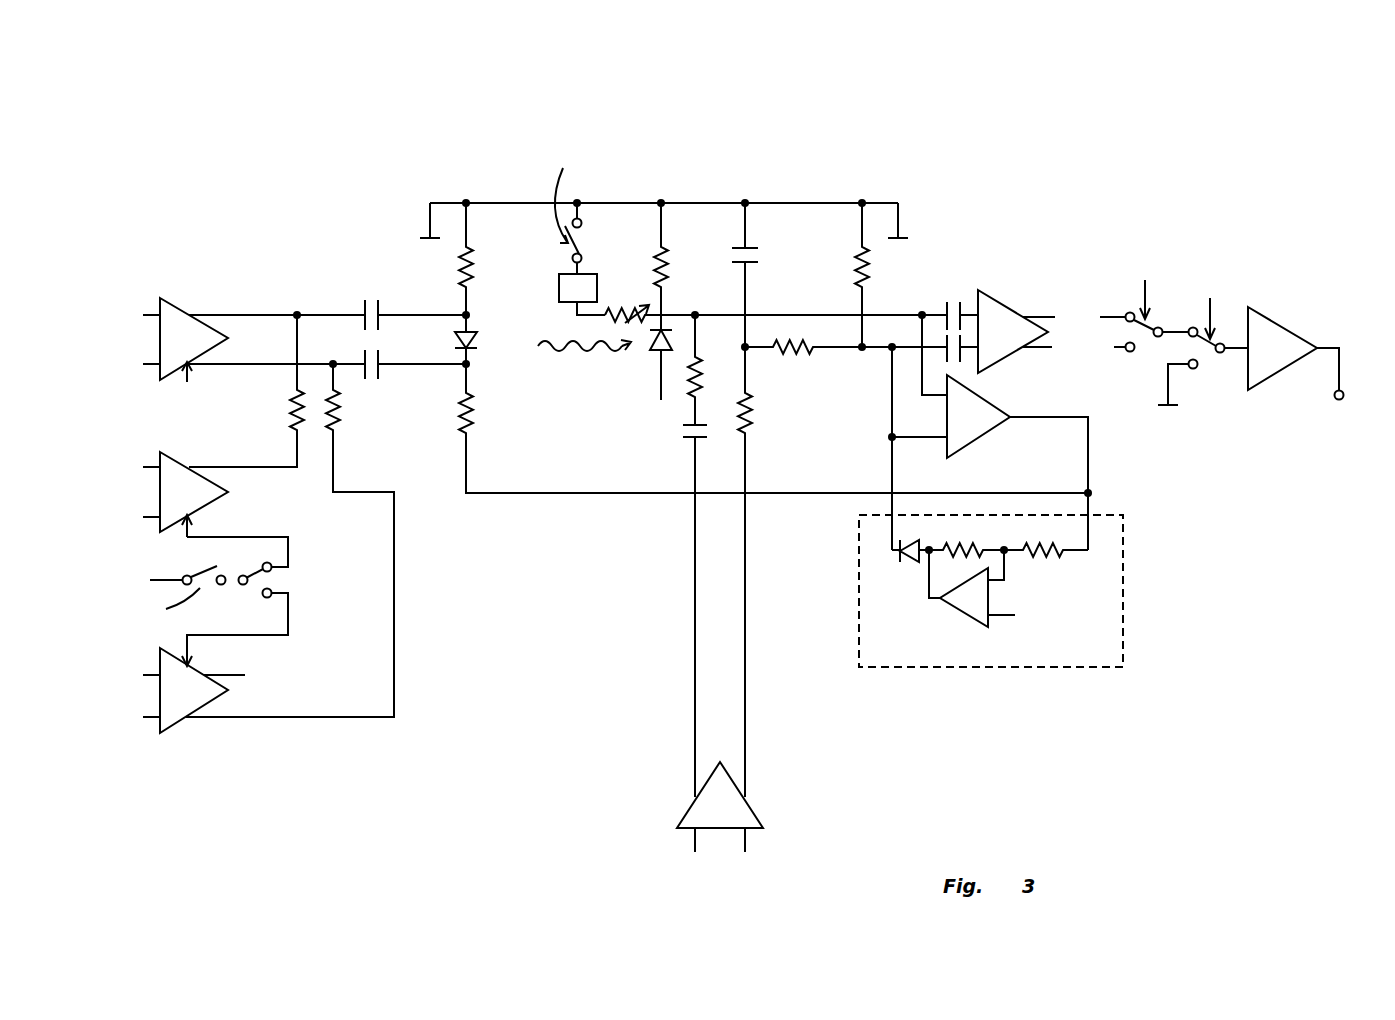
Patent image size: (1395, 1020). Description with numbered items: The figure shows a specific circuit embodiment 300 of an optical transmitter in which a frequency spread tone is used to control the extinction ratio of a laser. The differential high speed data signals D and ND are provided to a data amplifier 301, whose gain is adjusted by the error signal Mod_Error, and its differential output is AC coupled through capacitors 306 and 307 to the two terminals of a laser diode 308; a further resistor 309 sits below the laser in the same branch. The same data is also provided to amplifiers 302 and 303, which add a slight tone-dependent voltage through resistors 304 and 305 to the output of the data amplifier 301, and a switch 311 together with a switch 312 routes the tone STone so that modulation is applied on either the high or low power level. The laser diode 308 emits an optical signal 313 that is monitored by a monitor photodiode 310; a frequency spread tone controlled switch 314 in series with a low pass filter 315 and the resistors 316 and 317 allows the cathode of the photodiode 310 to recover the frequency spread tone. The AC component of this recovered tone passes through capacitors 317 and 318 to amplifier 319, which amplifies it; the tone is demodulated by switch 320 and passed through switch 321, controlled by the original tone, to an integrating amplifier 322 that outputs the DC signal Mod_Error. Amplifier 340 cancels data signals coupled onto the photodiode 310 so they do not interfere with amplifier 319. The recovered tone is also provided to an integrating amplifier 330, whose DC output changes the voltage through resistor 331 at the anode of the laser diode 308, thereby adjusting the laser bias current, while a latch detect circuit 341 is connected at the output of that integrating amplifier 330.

The circuit embodiment 300 is at (1145, 772).
The data amplifier 301 is at (205, 349).
The amplifier 302 is at (205, 503).
The amplifier 303 is at (205, 701).
The resistor 304 is at (290, 420).
The resistor 305 is at (341, 420).
The capacitor 306 is at (370, 304).
The capacitor 307 is at (371, 380).
The laser diode 308 is at (457, 342).
The resistor 309 is at (472, 407).
The monitor photodiode 310 is at (653, 353).
The switch 311 is at (203, 577).
The switch 312 is at (257, 588).
The optical signal 313 is at (573, 353).
The frequency spread tone controlled switch 314 is at (584, 239).
The low pass filter 315 is at (597, 283).
The resistor 316 is at (668, 266).
The resistor / capacitor 317 is at (633, 326).
The capacitor 318 is at (950, 358).
The amplifier 319 is at (1005, 366).
The switch 320 is at (1140, 352).
The switch 321 is at (1206, 360).
The integrating amplifier 322 is at (1264, 384).
The integrating amplifier 330 is at (982, 440).
The resistor 331 is at (458, 265).
The amplifier 340 is at (736, 819).
The latch detect circuit 341 is at (1107, 655).